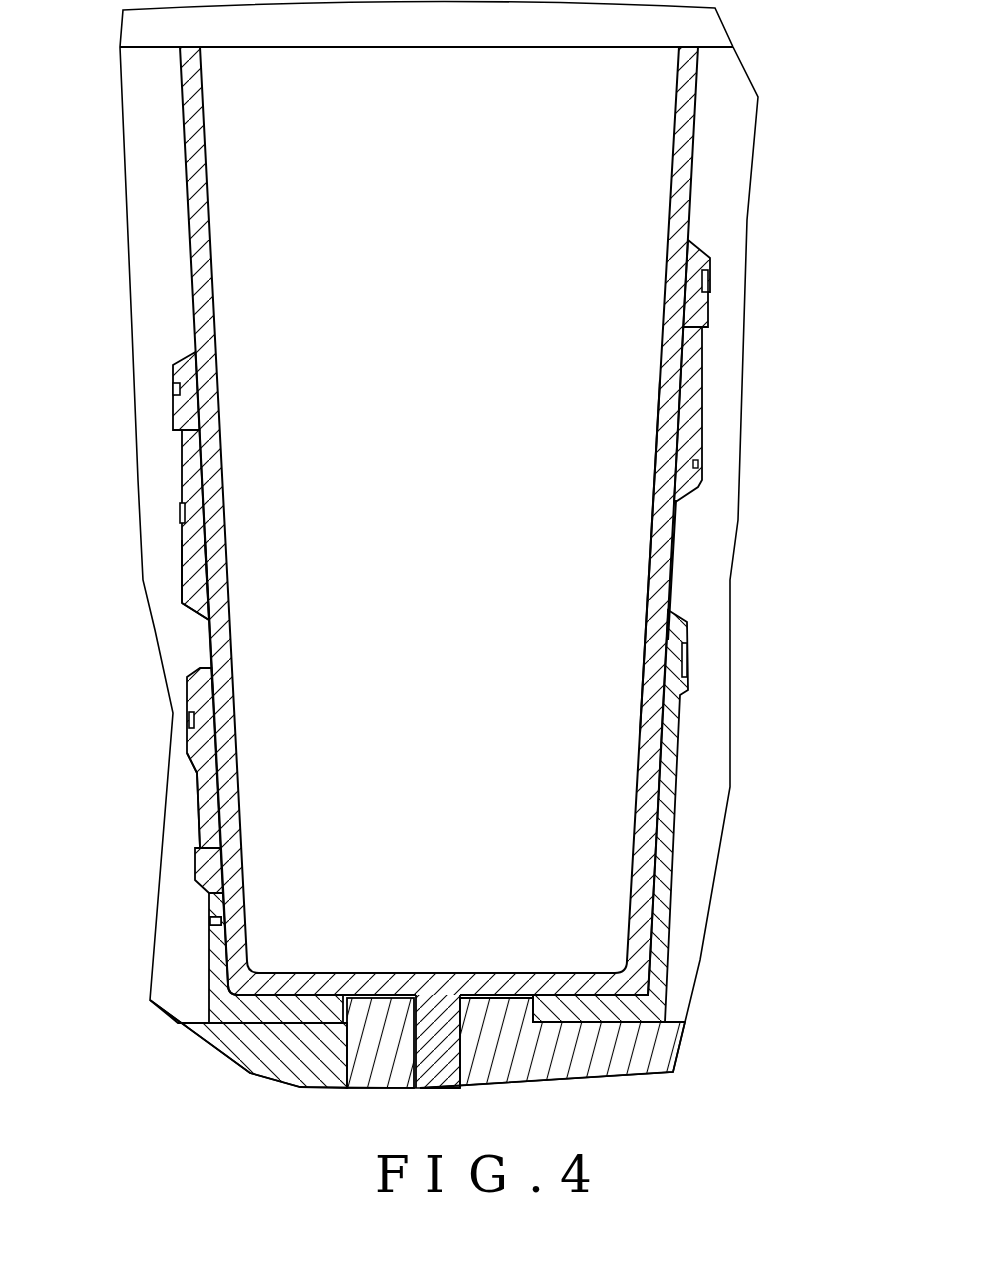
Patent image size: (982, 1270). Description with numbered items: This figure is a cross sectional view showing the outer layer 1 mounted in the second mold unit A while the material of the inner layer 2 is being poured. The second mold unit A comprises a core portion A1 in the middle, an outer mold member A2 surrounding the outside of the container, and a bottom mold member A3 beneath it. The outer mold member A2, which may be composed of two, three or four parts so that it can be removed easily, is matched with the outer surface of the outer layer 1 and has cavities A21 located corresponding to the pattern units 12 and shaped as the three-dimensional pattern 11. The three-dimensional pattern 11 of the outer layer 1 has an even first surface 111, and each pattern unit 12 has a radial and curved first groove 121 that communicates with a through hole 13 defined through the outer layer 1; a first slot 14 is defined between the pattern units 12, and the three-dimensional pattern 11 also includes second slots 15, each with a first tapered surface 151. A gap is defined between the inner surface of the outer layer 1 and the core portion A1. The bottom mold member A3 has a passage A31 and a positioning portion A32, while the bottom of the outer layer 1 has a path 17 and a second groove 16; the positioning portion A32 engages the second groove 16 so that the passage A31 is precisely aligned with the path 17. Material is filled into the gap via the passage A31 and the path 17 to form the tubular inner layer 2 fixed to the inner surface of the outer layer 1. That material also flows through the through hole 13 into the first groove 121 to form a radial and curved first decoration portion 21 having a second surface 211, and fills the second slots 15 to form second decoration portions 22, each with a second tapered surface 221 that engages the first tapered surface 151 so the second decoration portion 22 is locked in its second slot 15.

The outer layer 1 is at (232, 1003).
The inner layer 2 is at (197, 110).
The 3-D pattern 11 is at (125, 615).
The pattern unit 12 is at (194, 578).
The through hole 13 is at (181, 427).
The first slot 14 is at (212, 648).
The second slot 15 is at (146, 969).
The second groove 16 is at (534, 1010).
The path 17 is at (467, 1000).
The first decoration portion 21 is at (180, 463).
The second decoration portion 22 is at (208, 905).
The first surface 111 is at (181, 556).
The first groove 121 is at (182, 512).
The first tapered surface 151 is at (161, 956).
The second surface 211 is at (179, 445).
The second tapered surface 221 is at (222, 923).
The second mold unit A is at (780, 730).
The core portion A1 is at (615, 722).
The outer mold member A2 is at (703, 843).
The bottom mold member A3 is at (657, 1047).
The cavity A21 is at (683, 702).
The passage A31 is at (413, 1040).
The positioning portion A32 is at (367, 1008).